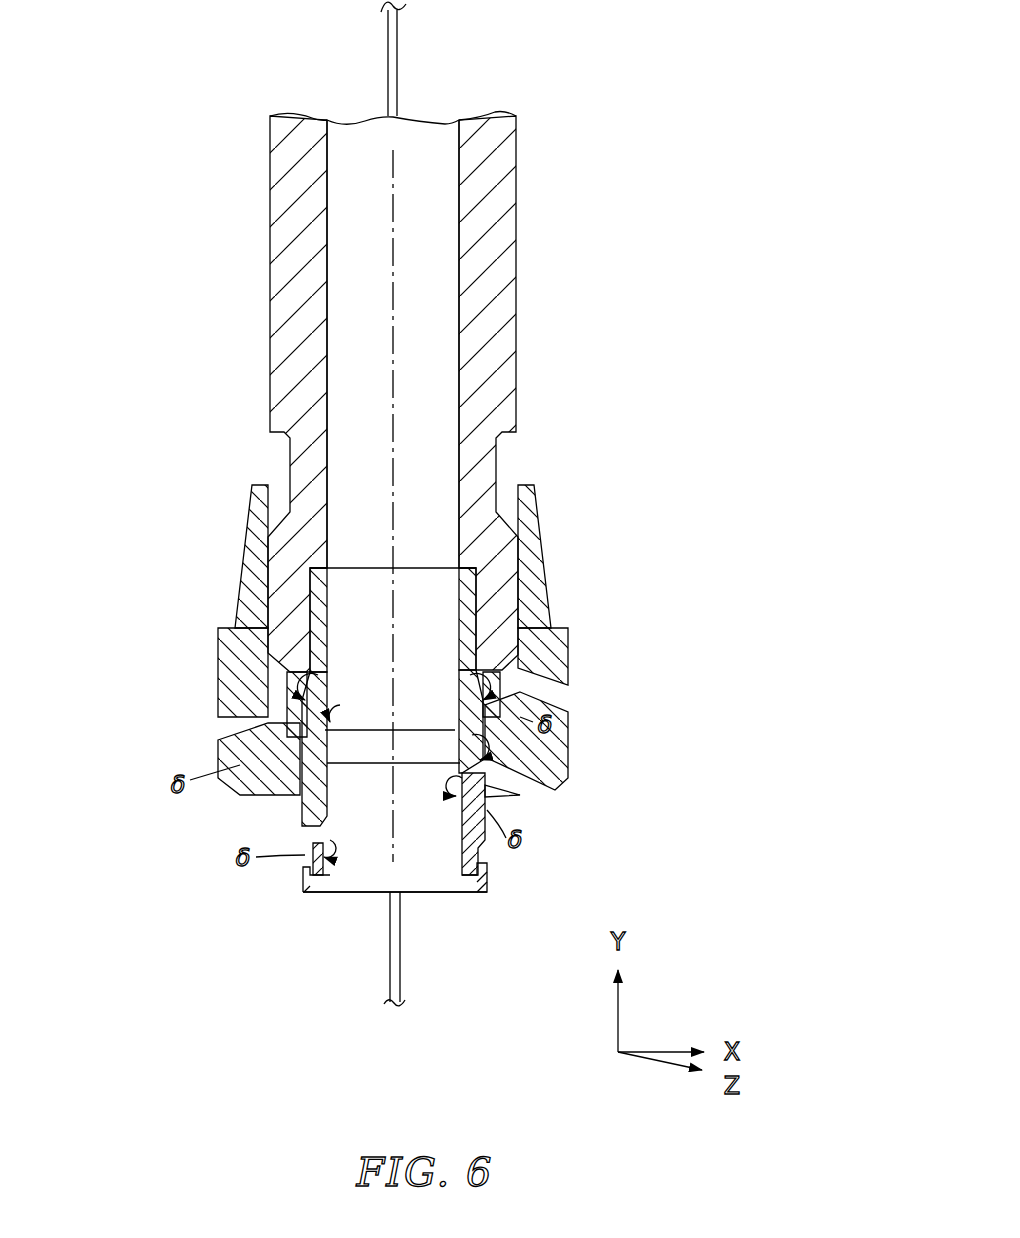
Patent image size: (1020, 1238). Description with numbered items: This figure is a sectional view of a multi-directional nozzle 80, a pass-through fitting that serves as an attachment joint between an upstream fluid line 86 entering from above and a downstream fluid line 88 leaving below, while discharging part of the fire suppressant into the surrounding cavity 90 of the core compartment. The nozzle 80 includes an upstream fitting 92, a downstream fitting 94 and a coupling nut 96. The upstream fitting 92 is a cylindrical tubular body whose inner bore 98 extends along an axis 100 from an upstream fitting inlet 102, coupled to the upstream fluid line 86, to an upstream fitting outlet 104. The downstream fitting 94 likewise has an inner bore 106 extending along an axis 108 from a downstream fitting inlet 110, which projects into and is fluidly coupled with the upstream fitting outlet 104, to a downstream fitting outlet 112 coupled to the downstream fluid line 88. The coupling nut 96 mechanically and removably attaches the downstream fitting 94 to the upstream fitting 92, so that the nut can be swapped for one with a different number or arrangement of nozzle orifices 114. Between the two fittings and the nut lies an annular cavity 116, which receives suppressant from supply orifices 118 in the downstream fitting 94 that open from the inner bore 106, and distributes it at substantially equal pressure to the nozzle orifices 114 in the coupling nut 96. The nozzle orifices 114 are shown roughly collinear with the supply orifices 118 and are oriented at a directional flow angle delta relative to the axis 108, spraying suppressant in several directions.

The multi-directional nozzle 80 is at (610, 183).
The upstream fluid line 86 is at (388, 38).
The downstream fluid line 88 is at (400, 965).
The cavity 90 is at (660, 473).
The upstream fitting 92 is at (258, 203).
The downstream fitting 94 is at (288, 888).
The coupling nut 96 is at (230, 582).
The inner bore 98 is at (436, 550).
The axis 100 is at (393, 196).
The upstream fitting inlet 102 is at (443, 124).
The upstream fitting outlet 104 is at (273, 632).
The inner bore 106 is at (440, 585).
The axis 108 is at (495, 615).
The downstream fitting inlet 110 is at (348, 567).
The downstream fitting outlet 112 is at (336, 895).
The nozzle orifices 114 is at (240, 724).
The cavity 116 is at (273, 685).
The supply orifices 118 is at (312, 690).